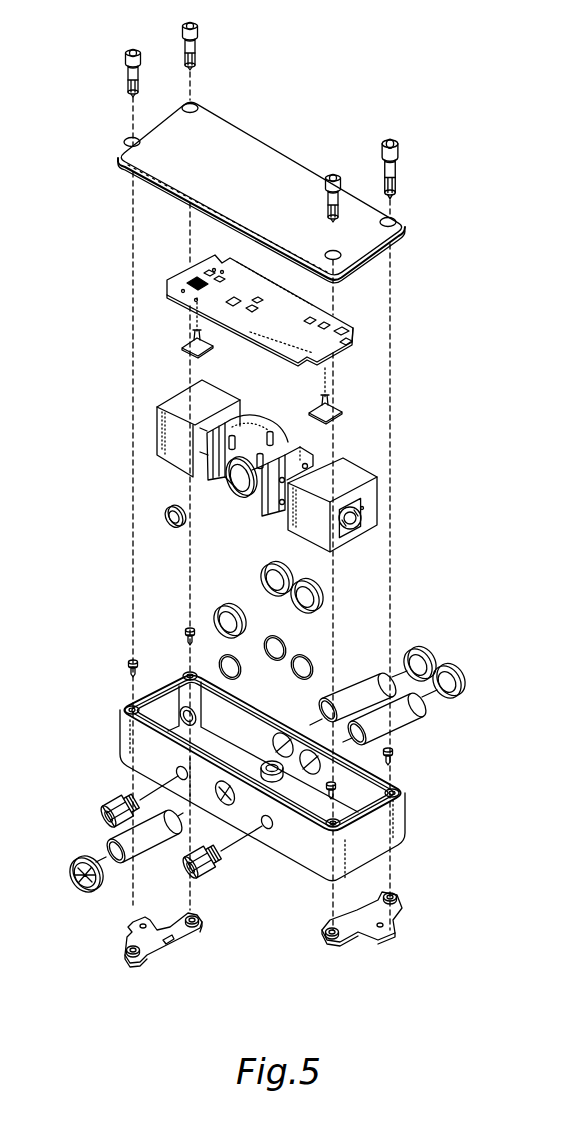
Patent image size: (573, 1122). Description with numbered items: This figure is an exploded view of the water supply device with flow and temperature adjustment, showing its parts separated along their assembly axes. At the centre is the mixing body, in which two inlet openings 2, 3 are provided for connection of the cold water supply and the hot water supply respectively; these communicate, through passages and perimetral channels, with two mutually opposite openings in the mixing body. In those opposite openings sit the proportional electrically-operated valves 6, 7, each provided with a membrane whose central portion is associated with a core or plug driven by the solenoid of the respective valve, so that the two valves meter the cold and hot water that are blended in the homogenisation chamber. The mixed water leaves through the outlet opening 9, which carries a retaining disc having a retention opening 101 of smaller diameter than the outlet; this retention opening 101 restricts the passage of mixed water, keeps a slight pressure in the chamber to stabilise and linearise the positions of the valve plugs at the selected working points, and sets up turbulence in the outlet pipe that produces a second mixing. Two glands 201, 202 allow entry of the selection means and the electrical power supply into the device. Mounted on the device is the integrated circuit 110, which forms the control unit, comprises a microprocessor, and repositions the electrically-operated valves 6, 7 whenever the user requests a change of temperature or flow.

The integrated circuit 110 is at (347, 322).
The cold water inlet opening 2 is at (328, 469).
The hot water inlet opening 3 is at (300, 442).
The proportional electrically-operated valve 6 is at (343, 458).
The proportional electrically-operated valve 7 is at (147, 432).
The outlet opening 9 is at (237, 482).
The retention opening 101 is at (165, 517).
The gland 201 is at (108, 795).
The gland 202 is at (212, 872).